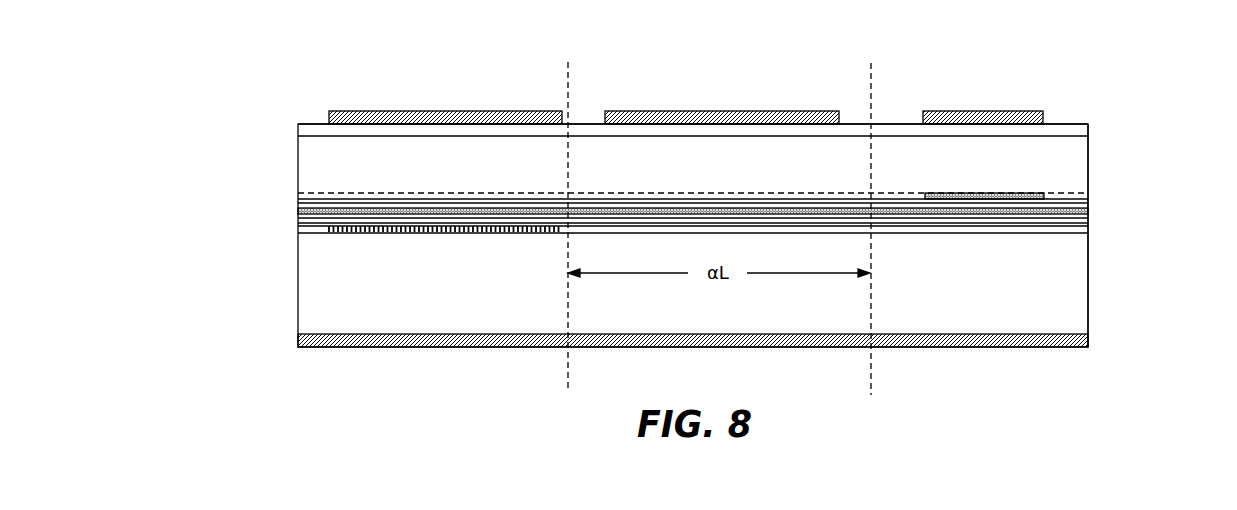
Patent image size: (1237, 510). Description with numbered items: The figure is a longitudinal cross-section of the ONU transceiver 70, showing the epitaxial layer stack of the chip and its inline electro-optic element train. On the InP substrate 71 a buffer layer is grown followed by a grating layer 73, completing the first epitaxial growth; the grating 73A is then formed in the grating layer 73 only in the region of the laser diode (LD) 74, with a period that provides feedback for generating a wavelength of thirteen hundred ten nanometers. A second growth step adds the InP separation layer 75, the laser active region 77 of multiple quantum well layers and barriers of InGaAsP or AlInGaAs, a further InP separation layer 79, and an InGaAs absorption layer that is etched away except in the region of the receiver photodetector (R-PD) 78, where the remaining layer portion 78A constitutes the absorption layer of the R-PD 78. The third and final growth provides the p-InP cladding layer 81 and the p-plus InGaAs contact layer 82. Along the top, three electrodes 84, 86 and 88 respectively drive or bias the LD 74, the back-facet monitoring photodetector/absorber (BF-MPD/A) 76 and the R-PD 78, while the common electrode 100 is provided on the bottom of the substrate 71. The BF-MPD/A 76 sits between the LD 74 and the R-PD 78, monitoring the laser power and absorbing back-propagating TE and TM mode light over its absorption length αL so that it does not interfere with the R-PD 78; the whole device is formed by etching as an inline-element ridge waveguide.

The ONU transceiver 70 is at (1090, 113).
The InP substrate 71 is at (310, 289).
The grating layer 73 is at (300, 229).
The grating 73A is at (433, 234).
The laser diode (LD) 74 is at (471, 226).
The separation layer 75 is at (300, 221).
The back-facet monitoring photodetector/absorber (BF-MPD/A) 76 is at (740, 229).
The laser active region 77 is at (298, 211).
The receiver photodetector (R-PD) 78 is at (1116, 187).
The absorption layer portion 78A is at (1005, 193).
The separation layer 79 is at (298, 201).
The p-InP cladding layer 81 is at (307, 153).
The p+-InGaAs contact layer 82 is at (298, 127).
The electrode 84 is at (553, 112).
The electrode 86 is at (757, 111).
The electrode 88 is at (932, 120).
The common electrode 100 is at (300, 340).